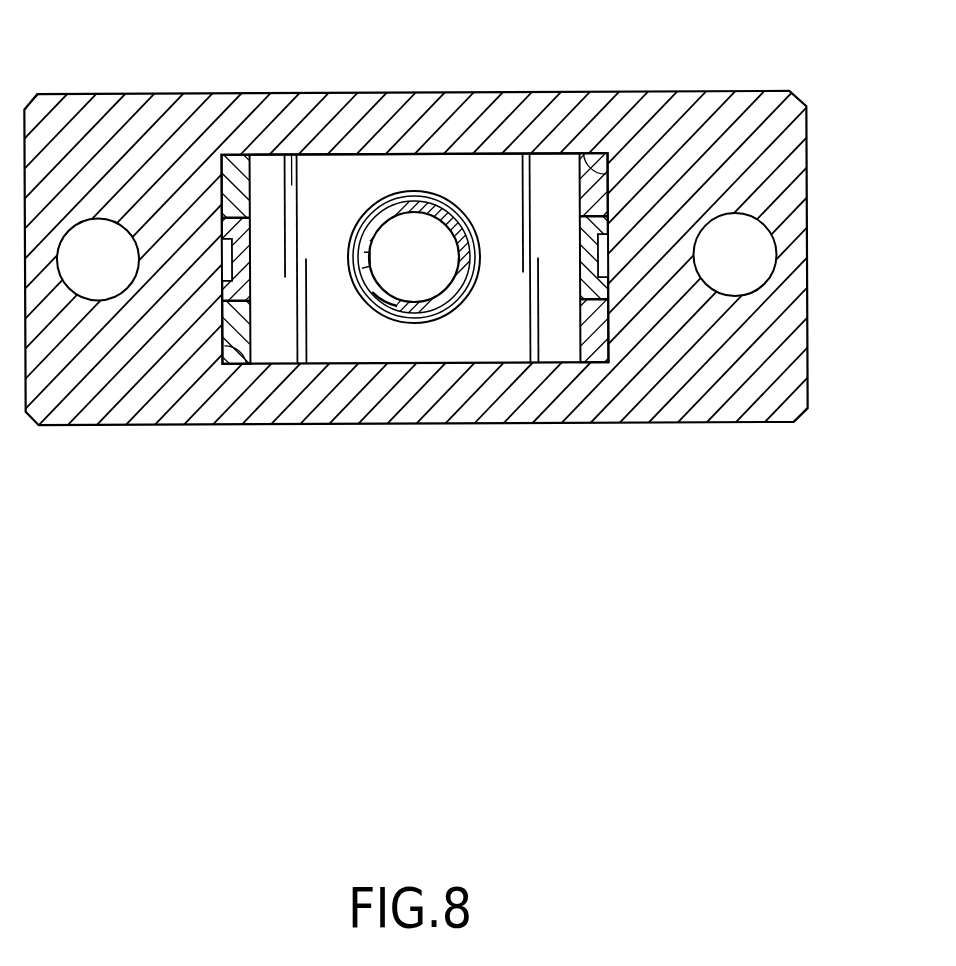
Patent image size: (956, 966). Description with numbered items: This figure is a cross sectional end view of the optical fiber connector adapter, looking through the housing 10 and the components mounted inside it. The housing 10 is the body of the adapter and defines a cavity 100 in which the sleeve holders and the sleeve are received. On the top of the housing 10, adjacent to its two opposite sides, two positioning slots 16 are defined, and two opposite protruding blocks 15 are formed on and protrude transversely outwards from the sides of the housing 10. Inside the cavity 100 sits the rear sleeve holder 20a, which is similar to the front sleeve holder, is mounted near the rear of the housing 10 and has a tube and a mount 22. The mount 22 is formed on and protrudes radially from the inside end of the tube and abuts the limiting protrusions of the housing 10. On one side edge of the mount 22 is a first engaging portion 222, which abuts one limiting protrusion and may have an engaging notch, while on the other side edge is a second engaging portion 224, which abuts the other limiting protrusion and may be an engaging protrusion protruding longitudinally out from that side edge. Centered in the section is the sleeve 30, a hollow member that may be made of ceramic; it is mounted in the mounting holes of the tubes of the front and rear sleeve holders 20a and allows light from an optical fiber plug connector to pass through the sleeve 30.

The housing 10 is at (745, 80).
The protruding block 15 is at (125, 113).
The positioning slot 16 is at (590, 152).
The rear sleeve holder 20a is at (421, 152).
The mount 22 is at (505, 173).
The first engaging portion 222 is at (237, 165).
The second engaging portion 224 is at (253, 247).
The sleeve 30 is at (435, 308).
The cavity 100 is at (313, 357).